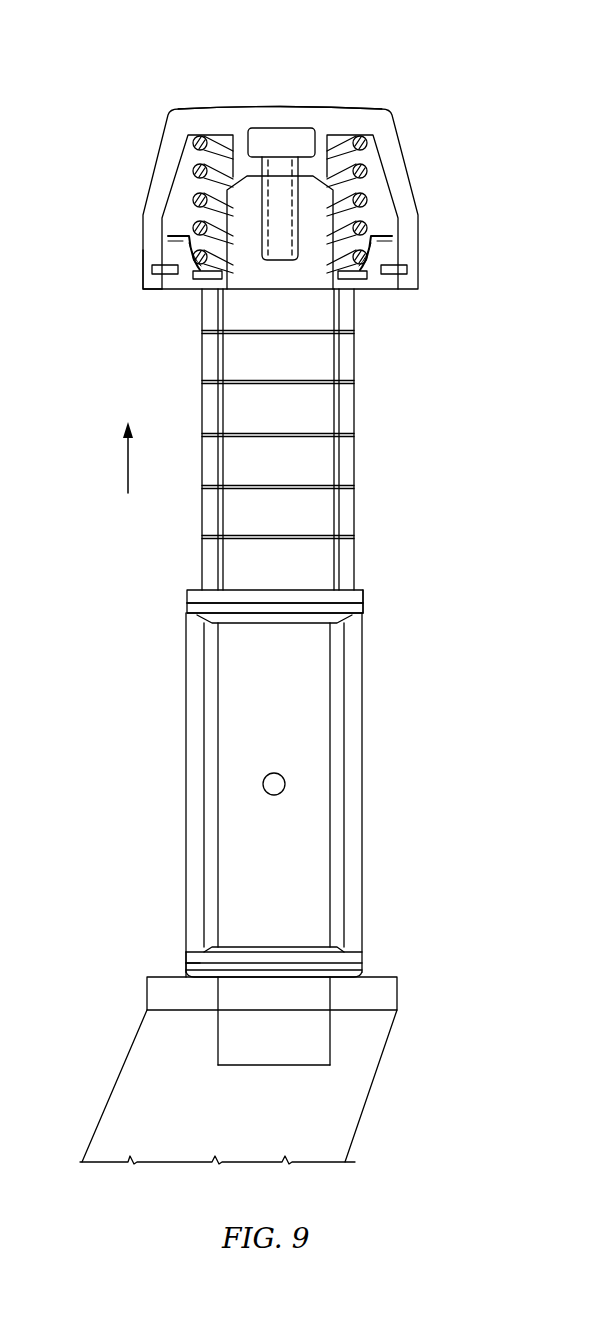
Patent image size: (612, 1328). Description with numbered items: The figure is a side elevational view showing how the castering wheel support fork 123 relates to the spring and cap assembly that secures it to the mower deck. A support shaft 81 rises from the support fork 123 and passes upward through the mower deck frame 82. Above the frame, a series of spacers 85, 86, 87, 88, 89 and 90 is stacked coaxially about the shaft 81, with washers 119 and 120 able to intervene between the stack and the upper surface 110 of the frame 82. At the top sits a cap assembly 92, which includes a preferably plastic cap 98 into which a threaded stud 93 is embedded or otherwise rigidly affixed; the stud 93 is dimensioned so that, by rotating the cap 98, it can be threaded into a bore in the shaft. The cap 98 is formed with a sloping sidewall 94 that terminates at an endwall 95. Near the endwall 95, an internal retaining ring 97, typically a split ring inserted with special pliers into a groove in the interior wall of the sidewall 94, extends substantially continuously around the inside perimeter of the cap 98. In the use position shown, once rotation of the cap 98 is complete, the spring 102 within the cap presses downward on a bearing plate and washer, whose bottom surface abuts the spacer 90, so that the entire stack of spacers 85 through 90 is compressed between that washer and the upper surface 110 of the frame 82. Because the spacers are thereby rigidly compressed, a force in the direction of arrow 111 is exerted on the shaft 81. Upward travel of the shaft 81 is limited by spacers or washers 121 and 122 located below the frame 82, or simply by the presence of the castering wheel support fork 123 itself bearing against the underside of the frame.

The support shaft 81 is at (247, 198).
The mower deck frame 82 is at (363, 733).
The spacer 85 is at (356, 558).
The spacer 86 is at (356, 507).
The spacer 87 is at (356, 452).
The spacer 88 is at (202, 408).
The spacer 89 is at (356, 360).
The spacer 90 is at (356, 313).
The cap assembly 92 is at (398, 92).
The threaded stud 93 is at (307, 135).
The sloping sidewall 94 is at (410, 180).
The endwall 95 is at (147, 292).
The internal retaining ring 97 is at (395, 266).
The cap 98 is at (232, 122).
The spring 102 is at (366, 142).
The upper surface 110 is at (363, 607).
The arrow 111 is at (127, 467).
The washer 119 is at (187, 595).
The washer 120 is at (187, 607).
The spacer or washer 121 is at (358, 960).
The spacer or washer 122 is at (187, 970).
The castering wheel support fork 123 is at (382, 994).